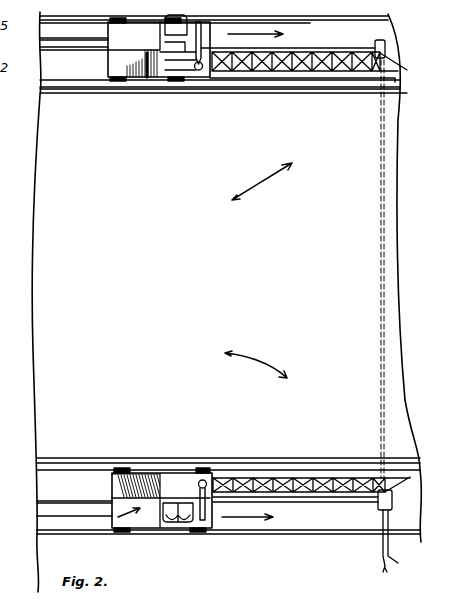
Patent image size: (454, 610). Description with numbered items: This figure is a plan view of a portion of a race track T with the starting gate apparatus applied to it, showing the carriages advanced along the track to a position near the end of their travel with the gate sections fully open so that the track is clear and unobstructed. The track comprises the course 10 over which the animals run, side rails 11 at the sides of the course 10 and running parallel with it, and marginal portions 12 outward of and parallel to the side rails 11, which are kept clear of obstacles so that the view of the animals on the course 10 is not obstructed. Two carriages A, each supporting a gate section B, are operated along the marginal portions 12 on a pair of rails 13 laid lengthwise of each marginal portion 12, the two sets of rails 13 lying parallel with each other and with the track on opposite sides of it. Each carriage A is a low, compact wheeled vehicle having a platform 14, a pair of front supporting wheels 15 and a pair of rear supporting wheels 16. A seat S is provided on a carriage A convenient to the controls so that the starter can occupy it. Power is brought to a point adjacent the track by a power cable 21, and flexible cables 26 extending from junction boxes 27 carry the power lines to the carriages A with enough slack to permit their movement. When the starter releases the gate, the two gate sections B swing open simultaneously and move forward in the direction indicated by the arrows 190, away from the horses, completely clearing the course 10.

The course 10 is at (58, 357).
The side rails 11 is at (165, 92).
The marginal portions 12 is at (364, 31).
The rails 13 is at (306, 17).
The platform 14 is at (160, 475).
The front supporting wheels 15 is at (205, 90).
The rear supporting wheels 16 is at (125, 80).
The power cable 21 is at (385, 548).
The flexible cables 26 is at (57, 58).
The junction boxes 27 is at (386, 45).
The arrows 190 is at (260, 194).
The carriages A is at (148, 77).
The gate section B is at (337, 76).
The seat S is at (162, 33).
The race track T is at (357, 286).